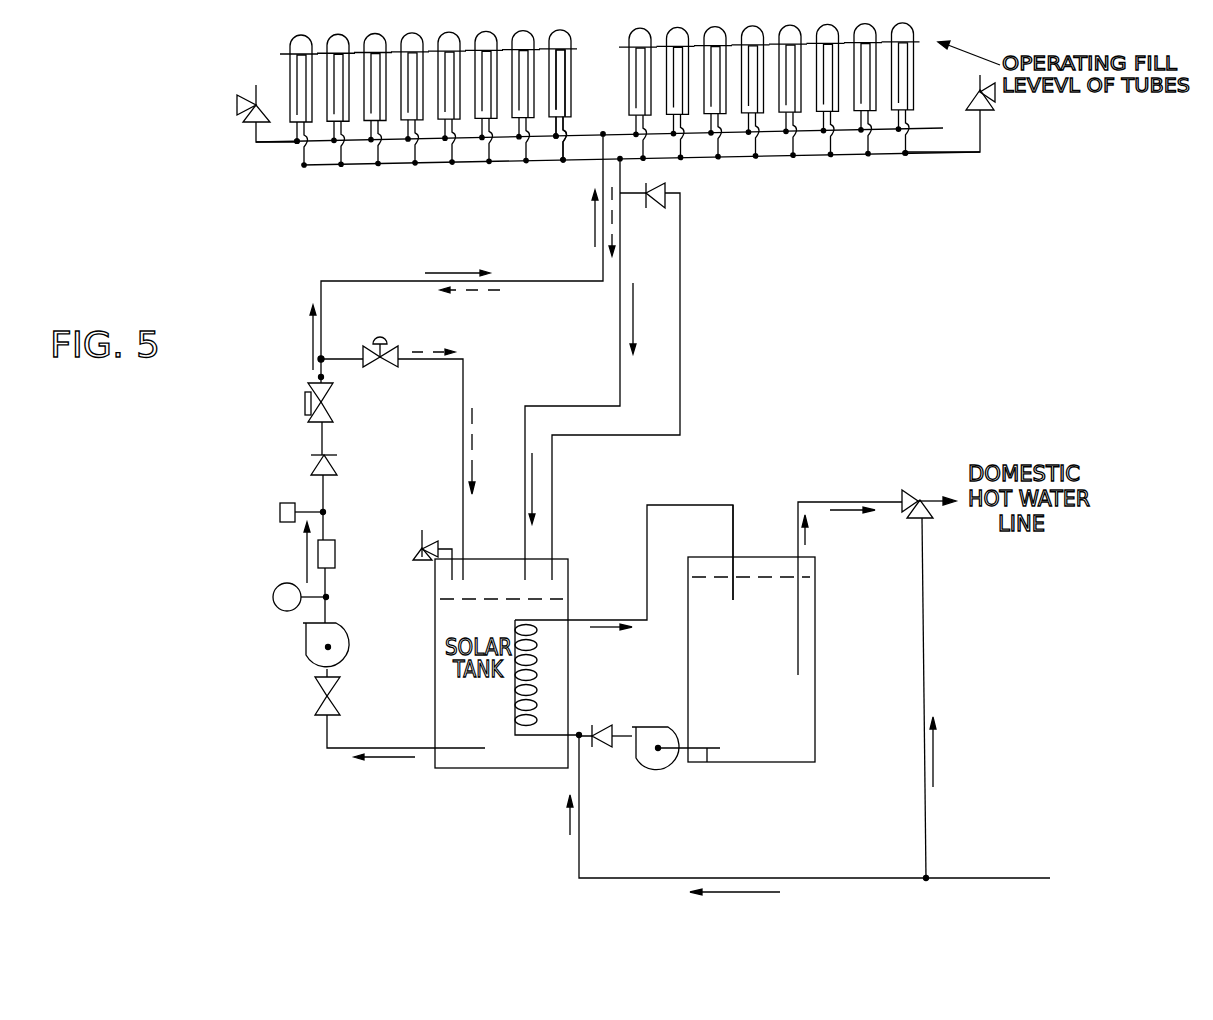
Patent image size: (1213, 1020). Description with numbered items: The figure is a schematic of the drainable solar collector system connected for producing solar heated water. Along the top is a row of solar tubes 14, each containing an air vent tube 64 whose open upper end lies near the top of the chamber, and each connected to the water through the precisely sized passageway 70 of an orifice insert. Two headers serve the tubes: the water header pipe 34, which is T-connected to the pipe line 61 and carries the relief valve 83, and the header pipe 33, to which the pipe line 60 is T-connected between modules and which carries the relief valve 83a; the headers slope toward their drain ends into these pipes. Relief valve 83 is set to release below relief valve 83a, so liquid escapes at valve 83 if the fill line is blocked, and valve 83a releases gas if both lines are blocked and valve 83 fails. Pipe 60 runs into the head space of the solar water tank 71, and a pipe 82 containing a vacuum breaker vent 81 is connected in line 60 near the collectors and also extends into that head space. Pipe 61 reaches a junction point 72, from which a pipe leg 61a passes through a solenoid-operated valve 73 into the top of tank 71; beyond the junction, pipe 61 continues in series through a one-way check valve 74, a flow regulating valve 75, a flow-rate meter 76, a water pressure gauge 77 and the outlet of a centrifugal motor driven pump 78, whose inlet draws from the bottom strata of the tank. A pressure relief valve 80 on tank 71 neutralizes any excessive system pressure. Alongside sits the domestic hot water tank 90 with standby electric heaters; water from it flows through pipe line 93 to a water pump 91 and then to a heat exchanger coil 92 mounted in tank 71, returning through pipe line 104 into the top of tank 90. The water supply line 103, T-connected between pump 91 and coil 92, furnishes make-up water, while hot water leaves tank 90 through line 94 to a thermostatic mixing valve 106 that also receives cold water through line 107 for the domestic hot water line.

The solar tube 14 is at (573, 90).
The air vent tube 64 is at (567, 47).
The passageway 70 is at (548, 128).
The water header pipe 34 is at (582, 136).
The header pipe 33 is at (587, 159).
The relief valve 83 is at (236, 110).
The relief valve 83a is at (990, 98).
The pipe line 60 is at (620, 172).
The vacuum breaker vent 81 is at (657, 210).
The pipe 82 is at (681, 296).
The pipe line 61 is at (537, 281).
The pipe 61a is at (343, 357).
The solenoid-operated valve 73 is at (395, 349).
The junction point 72 is at (325, 362).
The one-way check valve 74 is at (334, 412).
The flow regulating valve 75 is at (284, 503).
The flow-rate meter 76 is at (338, 549).
The water pressure gauge 77 is at (272, 590).
The centrifugal motor driven pump 78 is at (341, 654).
The pressure relief valve 80 is at (422, 546).
The solar water tank 71 is at (568, 607).
The heat exchanger coil 92 is at (537, 692).
The water pump 91 is at (652, 775).
The pipe line 93 is at (707, 763).
The domestic hot water tank 90 is at (817, 643).
The pipe line 104 is at (735, 543).
The line 94 is at (852, 500).
The thermostatic mixing valve 106 is at (913, 488).
The line 107 is at (930, 683).
The water supply line 103 is at (970, 876).